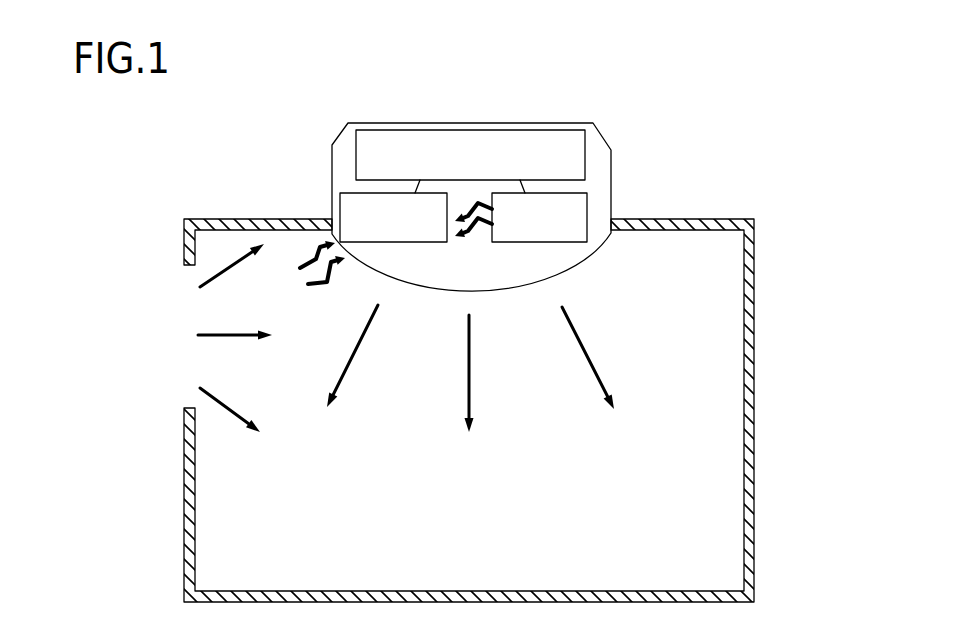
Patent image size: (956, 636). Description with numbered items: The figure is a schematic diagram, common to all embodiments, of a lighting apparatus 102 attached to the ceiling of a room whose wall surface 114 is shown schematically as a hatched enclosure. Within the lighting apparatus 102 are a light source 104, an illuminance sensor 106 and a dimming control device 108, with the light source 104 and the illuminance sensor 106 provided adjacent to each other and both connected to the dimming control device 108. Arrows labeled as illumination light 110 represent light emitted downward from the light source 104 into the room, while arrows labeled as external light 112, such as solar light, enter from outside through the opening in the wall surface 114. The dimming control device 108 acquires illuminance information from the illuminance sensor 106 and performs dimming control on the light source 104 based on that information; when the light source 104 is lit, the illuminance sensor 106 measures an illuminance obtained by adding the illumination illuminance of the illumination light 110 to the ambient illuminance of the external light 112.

The lighting apparatus 102 is at (611, 163).
The light source 104 is at (587, 208).
The illuminance sensor 106 is at (342, 203).
The dimming control device 108 is at (517, 130).
The illumination light 110 is at (352, 365).
The external light 112 is at (308, 275).
The wall surface 114 is at (753, 372).